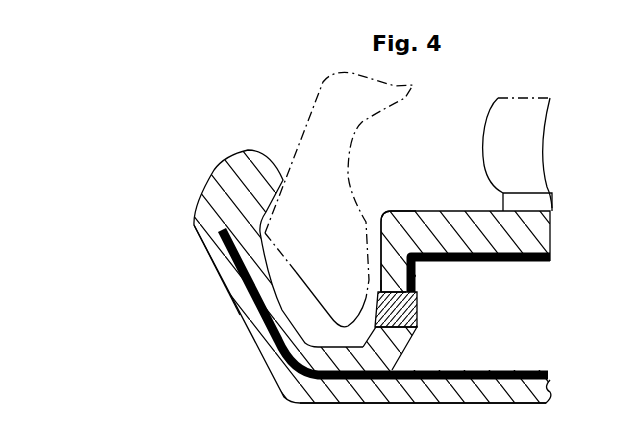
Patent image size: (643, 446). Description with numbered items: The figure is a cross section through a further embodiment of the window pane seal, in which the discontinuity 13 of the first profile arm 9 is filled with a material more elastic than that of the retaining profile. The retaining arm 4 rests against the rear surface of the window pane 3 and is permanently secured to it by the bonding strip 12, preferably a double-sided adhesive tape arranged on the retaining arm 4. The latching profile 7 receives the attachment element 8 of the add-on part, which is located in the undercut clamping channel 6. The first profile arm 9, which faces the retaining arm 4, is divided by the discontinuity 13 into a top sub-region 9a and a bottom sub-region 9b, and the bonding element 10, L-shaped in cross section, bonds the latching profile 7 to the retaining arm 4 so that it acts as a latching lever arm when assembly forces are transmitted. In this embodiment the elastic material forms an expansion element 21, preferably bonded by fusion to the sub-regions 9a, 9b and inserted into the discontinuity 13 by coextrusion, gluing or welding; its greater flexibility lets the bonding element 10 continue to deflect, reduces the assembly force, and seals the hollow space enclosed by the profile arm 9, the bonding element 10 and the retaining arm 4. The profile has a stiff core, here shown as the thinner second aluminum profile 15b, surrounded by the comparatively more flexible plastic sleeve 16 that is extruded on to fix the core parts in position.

The window pane 3 is at (527, 162).
The retaining arm 4 is at (567, 233).
The undercut clamping channel 6 is at (312, 318).
The latching profile 7 is at (186, 280).
The attachment element 8 is at (333, 240).
The first profile arm 9 is at (395, 232).
The top sub-region 9a is at (391, 278).
The bottom sub-region 9b is at (395, 335).
The bonding element 10 is at (529, 356).
The bonding strip 12 is at (520, 201).
The discontinuity 13 is at (429, 322).
The second aluminum profile 15b is at (213, 200).
The plastic sleeve 16 is at (245, 172).
The expansion element 21 is at (418, 304).